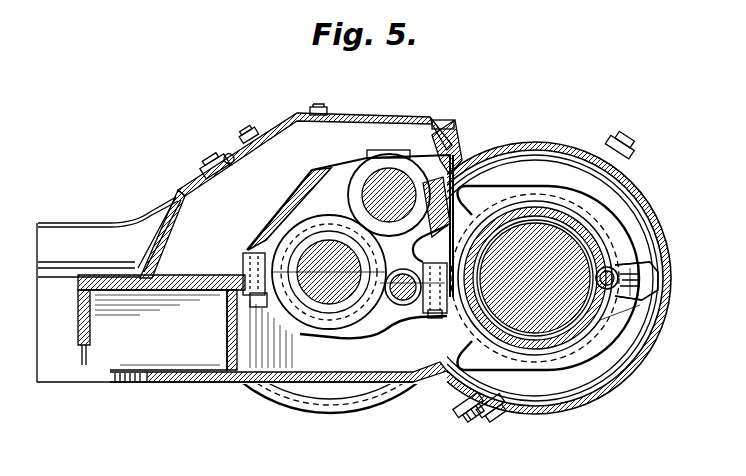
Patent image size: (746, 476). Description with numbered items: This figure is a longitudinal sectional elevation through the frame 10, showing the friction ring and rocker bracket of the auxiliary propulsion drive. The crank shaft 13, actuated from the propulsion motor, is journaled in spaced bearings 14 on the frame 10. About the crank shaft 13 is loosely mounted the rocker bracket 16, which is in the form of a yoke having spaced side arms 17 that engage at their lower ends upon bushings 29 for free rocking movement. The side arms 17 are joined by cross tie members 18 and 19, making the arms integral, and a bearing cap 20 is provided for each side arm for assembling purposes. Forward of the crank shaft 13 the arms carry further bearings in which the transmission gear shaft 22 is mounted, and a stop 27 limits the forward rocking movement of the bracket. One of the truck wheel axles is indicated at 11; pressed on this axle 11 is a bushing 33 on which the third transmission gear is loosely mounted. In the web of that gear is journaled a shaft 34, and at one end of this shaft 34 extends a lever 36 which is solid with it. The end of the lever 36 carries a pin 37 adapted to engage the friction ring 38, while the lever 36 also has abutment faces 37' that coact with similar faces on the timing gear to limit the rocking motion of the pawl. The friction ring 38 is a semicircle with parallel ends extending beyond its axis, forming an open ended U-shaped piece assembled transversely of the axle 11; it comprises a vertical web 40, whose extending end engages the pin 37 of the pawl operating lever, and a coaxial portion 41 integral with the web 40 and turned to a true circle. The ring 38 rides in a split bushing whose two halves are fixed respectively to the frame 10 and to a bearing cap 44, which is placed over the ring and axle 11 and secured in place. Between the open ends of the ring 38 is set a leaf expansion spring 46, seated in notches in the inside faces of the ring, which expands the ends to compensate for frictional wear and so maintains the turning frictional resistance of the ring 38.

The frame 10 is at (381, 383).
The wheel axle 11 is at (598, 224).
The crank shaft 13 is at (333, 305).
The bearings 14 is at (267, 384).
The rocker bracket 16 is at (340, 180).
The side arms 17 is at (353, 166).
The cross tie member 18 is at (452, 175).
The cross tie member 19 is at (290, 203).
The bearing cap 20 is at (311, 336).
The transmission gear shaft 22 is at (403, 300).
The stop 27 is at (512, 166).
The bushings 29 is at (300, 303).
The bushing 33 is at (638, 358).
The shaft 34 is at (650, 250).
The lever 36 is at (608, 294).
The pin 37 is at (653, 270).
The abutment faces 37' is at (658, 265).
The friction ring 38 is at (620, 318).
The vertical web 40 is at (586, 350).
The coaxial portion 41 is at (590, 200).
The bearing cap 44 is at (550, 410).
The leaf expansion spring 46 is at (445, 385).